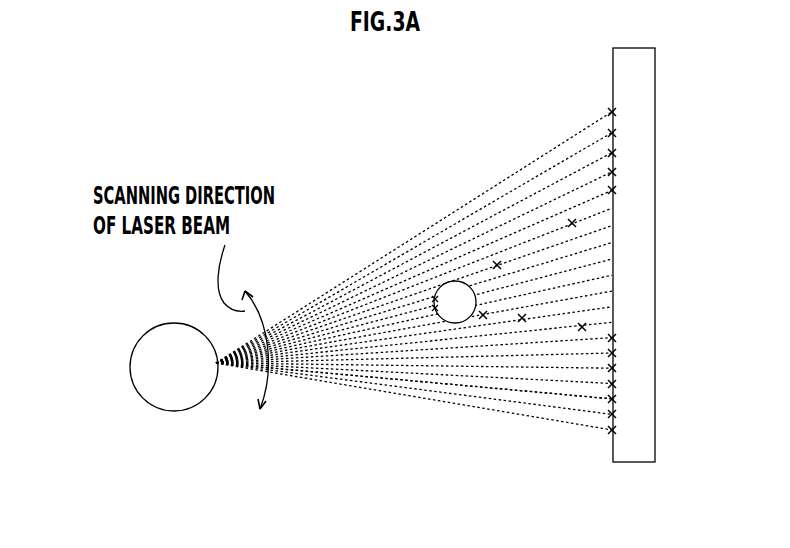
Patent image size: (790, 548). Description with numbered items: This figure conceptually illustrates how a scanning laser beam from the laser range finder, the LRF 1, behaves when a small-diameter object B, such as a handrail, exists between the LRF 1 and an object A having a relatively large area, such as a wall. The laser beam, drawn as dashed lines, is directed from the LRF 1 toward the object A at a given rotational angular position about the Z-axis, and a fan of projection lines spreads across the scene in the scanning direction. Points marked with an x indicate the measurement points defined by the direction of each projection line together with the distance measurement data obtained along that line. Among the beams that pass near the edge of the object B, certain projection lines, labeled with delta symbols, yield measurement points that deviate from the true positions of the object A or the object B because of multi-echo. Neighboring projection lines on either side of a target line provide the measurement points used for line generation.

The LRF 1 is at (205, 404).
The object A is at (613, 92).
The object B is at (462, 281).